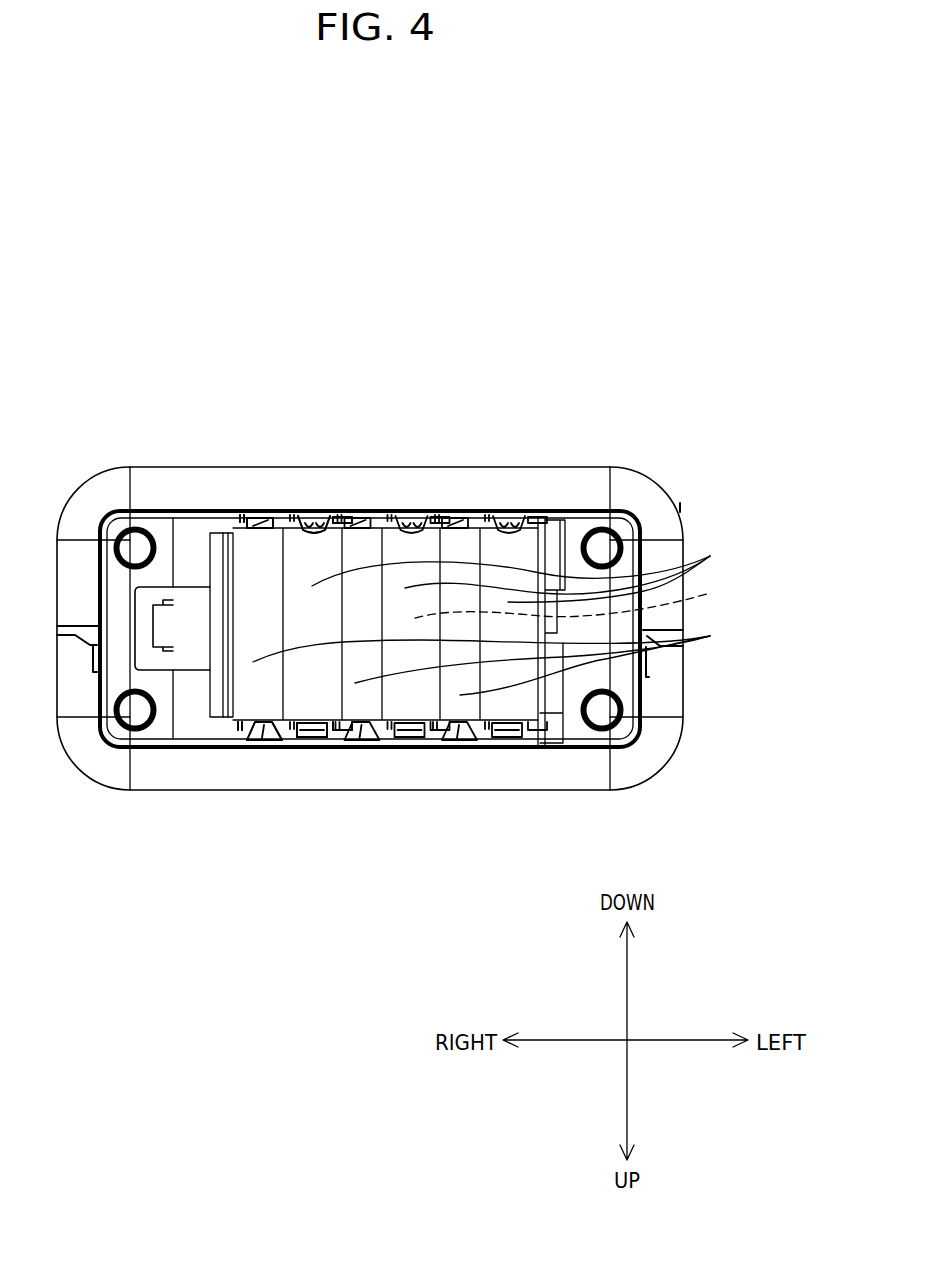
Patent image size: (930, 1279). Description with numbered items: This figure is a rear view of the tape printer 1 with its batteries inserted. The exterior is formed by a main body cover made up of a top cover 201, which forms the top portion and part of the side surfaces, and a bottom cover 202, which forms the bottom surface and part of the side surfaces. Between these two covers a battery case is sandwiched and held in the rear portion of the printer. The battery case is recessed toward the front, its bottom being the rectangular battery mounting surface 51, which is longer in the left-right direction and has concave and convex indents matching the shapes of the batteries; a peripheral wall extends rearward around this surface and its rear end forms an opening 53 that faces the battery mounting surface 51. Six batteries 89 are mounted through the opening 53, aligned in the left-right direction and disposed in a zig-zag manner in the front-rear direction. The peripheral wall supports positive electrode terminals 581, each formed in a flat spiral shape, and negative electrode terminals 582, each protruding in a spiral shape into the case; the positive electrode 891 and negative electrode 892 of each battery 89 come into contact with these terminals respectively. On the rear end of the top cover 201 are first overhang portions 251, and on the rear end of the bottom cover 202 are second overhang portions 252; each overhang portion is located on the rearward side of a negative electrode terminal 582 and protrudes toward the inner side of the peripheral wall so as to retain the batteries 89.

The tape printer 1 is at (93, 440).
The top cover 201 is at (623, 790).
The bottom cover 202 is at (622, 470).
The opening 53 is at (196, 662).
The battery mounting surface 51 is at (576, 598).
The battery 89 is at (495, 617).
The first overhang portion 251 is at (250, 750).
The second overhang portion 252 is at (318, 510).
The positive electrode terminal 581 is at (242, 507).
The negative electrode terminal 582 is at (288, 513).
The positive electrode 891 is at (241, 513).
The negative electrode 892 is at (263, 510).